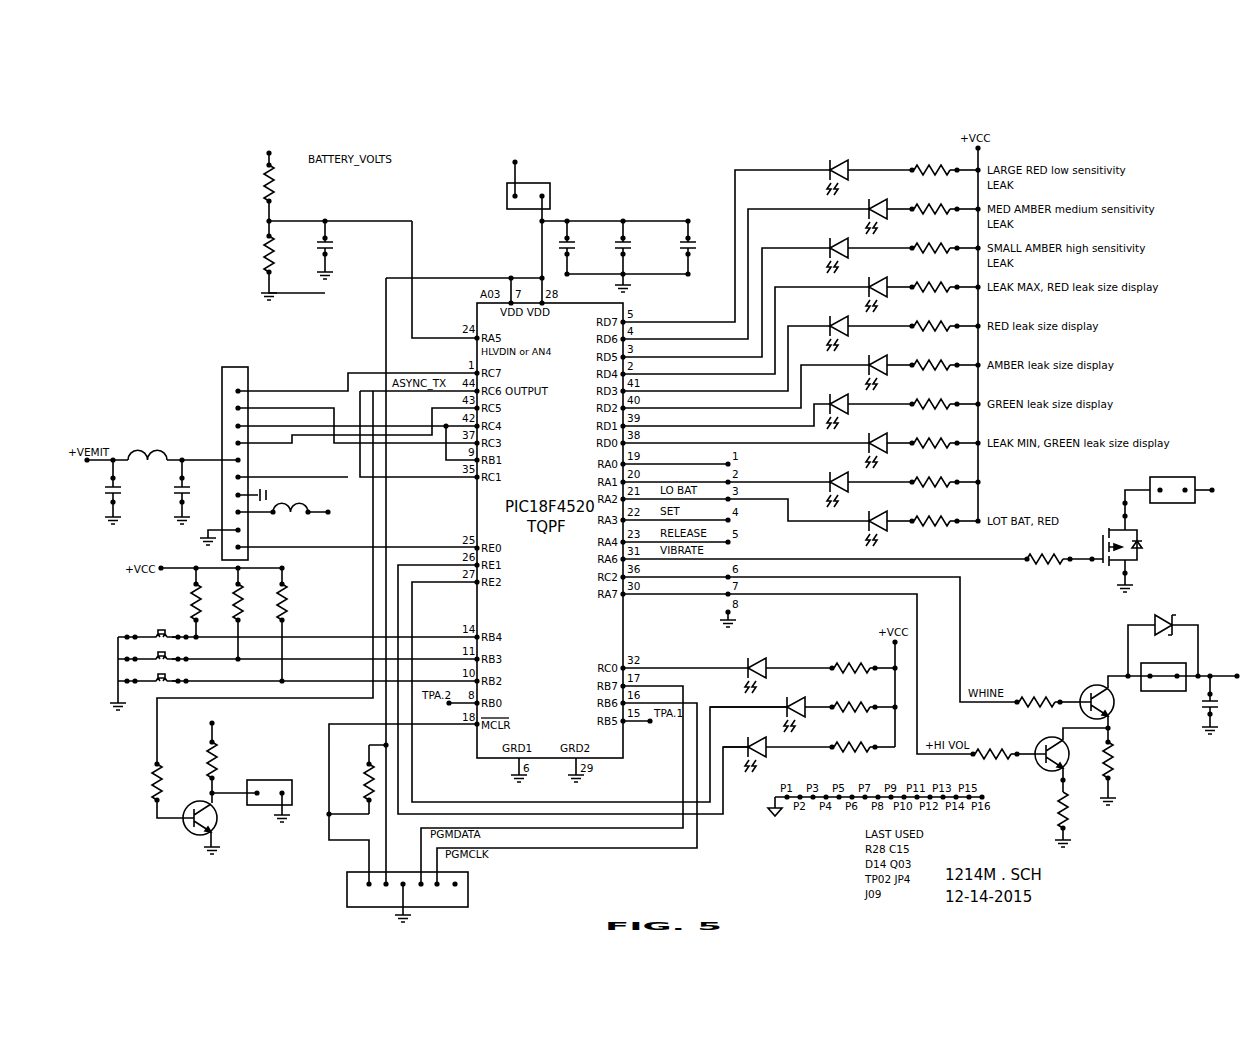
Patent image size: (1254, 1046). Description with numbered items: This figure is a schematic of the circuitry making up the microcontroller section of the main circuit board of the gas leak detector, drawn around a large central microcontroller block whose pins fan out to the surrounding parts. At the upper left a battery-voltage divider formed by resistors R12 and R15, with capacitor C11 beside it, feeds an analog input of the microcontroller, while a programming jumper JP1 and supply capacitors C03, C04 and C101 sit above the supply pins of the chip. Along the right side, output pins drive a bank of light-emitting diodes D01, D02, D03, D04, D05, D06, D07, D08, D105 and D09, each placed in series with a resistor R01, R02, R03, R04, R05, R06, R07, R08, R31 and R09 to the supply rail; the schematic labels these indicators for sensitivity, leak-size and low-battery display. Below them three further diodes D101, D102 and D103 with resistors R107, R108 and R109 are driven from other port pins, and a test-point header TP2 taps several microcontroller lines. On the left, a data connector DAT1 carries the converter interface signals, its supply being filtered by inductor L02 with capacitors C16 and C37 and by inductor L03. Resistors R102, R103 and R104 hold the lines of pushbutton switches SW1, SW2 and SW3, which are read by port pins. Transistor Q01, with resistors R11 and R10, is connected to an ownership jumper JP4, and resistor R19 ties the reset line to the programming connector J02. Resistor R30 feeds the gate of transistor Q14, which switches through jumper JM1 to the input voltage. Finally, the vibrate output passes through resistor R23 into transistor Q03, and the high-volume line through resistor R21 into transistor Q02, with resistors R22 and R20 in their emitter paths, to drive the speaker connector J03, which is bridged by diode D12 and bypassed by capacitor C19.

The resistor 75.0K R12 is at (283, 181).
The resistor 60K R15 is at (293, 260).
The capacitor 0.1 C11 is at (340, 248).
The program jumper JP1 is at (569, 178).
The capacitor 0.1UF C03 is at (583, 247).
The capacitor 0.01UF C04 is at (643, 247).
The capacitor 0.1UF C101 is at (705, 247).
The LED large red low sensitivity leak D01 is at (868, 171).
The LED medium amber D02 is at (889, 210).
The LED small amber D03 is at (868, 249).
The LED leak max red D04 is at (889, 288).
The LED red leak size D05 is at (868, 327).
The LED amber leak size D06 is at (889, 366).
The LED green leak size D07 is at (868, 405).
The LED leak min green D08 is at (889, 444).
The LED D105 is at (867, 483).
The LED low battery red D09 is at (889, 522).
The resistor 470 R01 is at (944, 162).
The resistor 470 R02 is at (944, 201).
The resistor 470 R03 is at (944, 240).
The resistor 470 R04 is at (944, 279).
The resistor 470 R05 is at (944, 318).
The resistor 470 R06 is at (944, 357).
The resistor 470 R07 is at (944, 396).
The resistor 470 R08 is at (944, 435).
The resistor 470 R31 is at (944, 474).
The resistor 470 R09 is at (944, 513).
The LED D101 is at (787, 669).
The LED D102 is at (807, 708).
The LED D103 is at (787, 748).
The resistor 470 R107 is at (862, 660).
The resistor 470 R108 is at (862, 699).
The resistor 470 R109 is at (860, 739).
The test point header TP2 is at (713, 457).
The data connector DAT1 is at (263, 456).
The inductor L02 is at (162, 448).
The capacitor C16 is at (125, 490).
The capacitor C37 is at (194, 490).
The inductor L03 is at (291, 500).
The pull-up resistor R102 is at (210, 601).
The pull-up resistor R103 is at (252, 612).
The pull-up resistor R104 is at (297, 623).
The switch SW1 is at (297, 625).
The switch SW2 is at (297, 652).
The switch SW3 is at (297, 674).
The resistor 1.0K R11 is at (154, 787).
The resistor 1.0K R10 is at (205, 755).
The transistor Q01 is at (213, 827).
The ownership jumper JP4 is at (262, 790).
The resistor 10K R19 is at (357, 779).
The programming connector J02 is at (396, 897).
The resistor 1K R30 is at (1063, 568).
The MOSFET STN3P6 Q14 is at (1104, 541).
The jumper JM1 is at (1187, 482).
The resistor 1.0K R23 is at (1047, 688).
The transistor Q03 is at (1109, 703).
The resistor 750 R22 is at (1119, 766).
The resistor 1.0K R21 is at (1002, 740).
The transistor Q02 is at (1071, 755).
The resistor 1K R20 is at (1075, 813).
The zener diode D12 is at (1163, 638).
The speaker connector J03 is at (1186, 676).
The capacitor 0.1UF C19 is at (1226, 703).